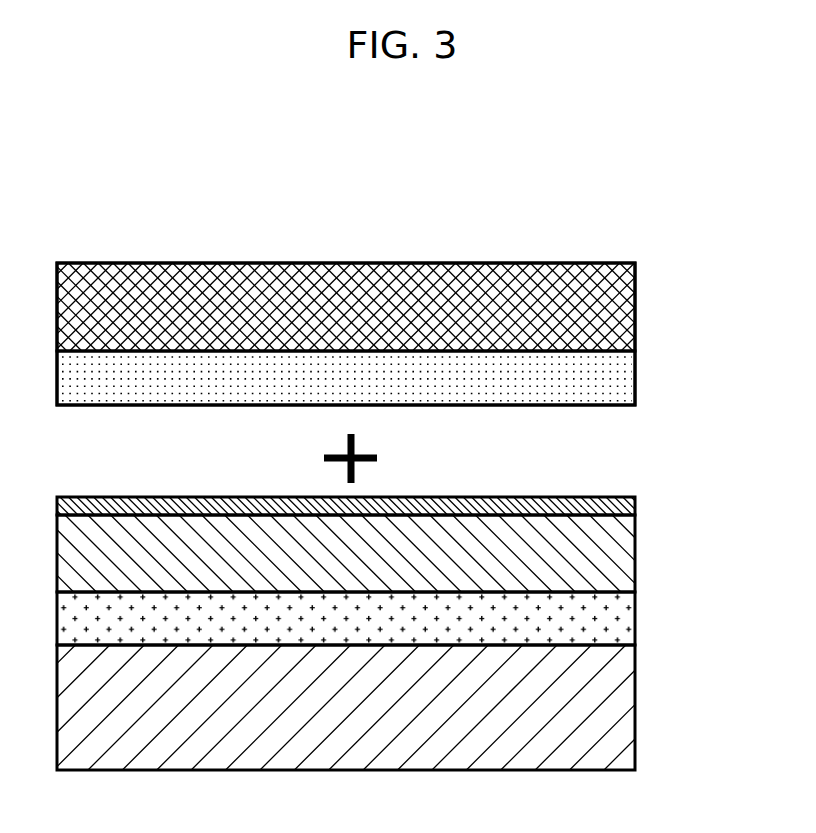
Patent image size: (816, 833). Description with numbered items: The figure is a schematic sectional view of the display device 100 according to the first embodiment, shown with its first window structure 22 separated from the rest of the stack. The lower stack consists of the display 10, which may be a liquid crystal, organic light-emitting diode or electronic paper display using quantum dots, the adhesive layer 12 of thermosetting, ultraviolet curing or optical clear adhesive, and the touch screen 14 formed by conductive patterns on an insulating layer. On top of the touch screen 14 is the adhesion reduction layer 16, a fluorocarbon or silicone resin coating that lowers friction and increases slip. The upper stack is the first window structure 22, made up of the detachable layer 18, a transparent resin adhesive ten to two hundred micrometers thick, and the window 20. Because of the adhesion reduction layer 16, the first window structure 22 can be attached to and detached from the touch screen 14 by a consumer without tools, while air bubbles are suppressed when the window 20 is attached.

The display device 100 is at (78, 193).
The display 10 is at (627, 708).
The adhesive layer 12 is at (627, 623).
The touch screen 14 is at (627, 553).
The adhesion reduction layer 16 is at (627, 510).
The detachable layer 18 is at (627, 384).
The window 20 is at (627, 306).
The first window structure 22 is at (712, 305).